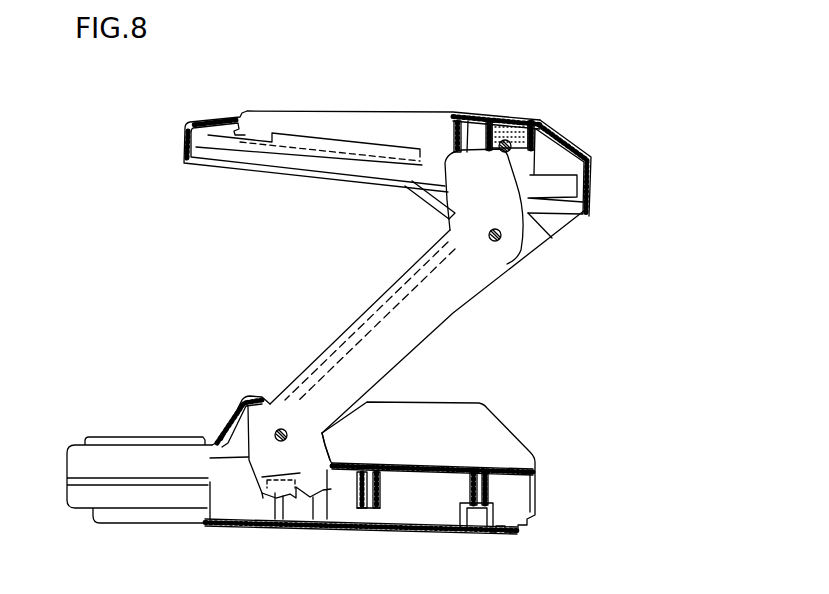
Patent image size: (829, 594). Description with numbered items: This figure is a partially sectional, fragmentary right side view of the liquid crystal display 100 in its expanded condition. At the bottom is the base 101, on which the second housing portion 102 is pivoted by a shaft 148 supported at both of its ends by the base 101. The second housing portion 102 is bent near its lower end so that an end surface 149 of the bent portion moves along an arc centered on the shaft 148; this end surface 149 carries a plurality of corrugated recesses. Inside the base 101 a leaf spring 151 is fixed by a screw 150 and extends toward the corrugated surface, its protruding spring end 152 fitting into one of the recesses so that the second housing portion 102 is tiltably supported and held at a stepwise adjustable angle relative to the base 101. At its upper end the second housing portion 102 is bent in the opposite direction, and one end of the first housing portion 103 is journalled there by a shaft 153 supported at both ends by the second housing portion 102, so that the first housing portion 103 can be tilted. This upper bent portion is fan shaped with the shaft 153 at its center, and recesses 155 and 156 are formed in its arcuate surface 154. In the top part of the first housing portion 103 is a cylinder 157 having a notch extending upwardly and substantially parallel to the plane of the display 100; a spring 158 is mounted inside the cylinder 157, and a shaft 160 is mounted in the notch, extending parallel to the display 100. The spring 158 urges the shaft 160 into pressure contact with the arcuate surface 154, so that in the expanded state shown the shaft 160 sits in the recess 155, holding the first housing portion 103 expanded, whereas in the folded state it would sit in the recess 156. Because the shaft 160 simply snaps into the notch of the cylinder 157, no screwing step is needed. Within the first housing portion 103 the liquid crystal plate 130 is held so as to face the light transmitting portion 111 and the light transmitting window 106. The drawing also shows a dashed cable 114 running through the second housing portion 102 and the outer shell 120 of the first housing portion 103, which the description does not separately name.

The liquid crystal display 100 is at (190, 272).
The base 101 is at (537, 497).
The second housing portion 102 is at (445, 305).
The first housing portion 103 is at (588, 157).
The light transmitting window 106 is at (320, 177).
The light transmitting portion 111 is at (365, 127).
The flexible cable 114 is at (331, 343).
The upper housing 120 is at (320, 112).
The liquid crystal plate 130 is at (262, 150).
The shaft 148 is at (275, 430).
The end surface 149 is at (337, 520).
The screw 150 is at (375, 513).
The leaf spring 151 is at (313, 520).
The protruding spring end 152 is at (280, 520).
The shaft 153 is at (498, 241).
The arcuate surface 154 is at (470, 120).
The recess 155 is at (552, 238).
The recess 156 is at (433, 216).
The cylinder 157 is at (488, 120).
The spring 158 is at (510, 117).
The shaft 160 is at (511, 147).